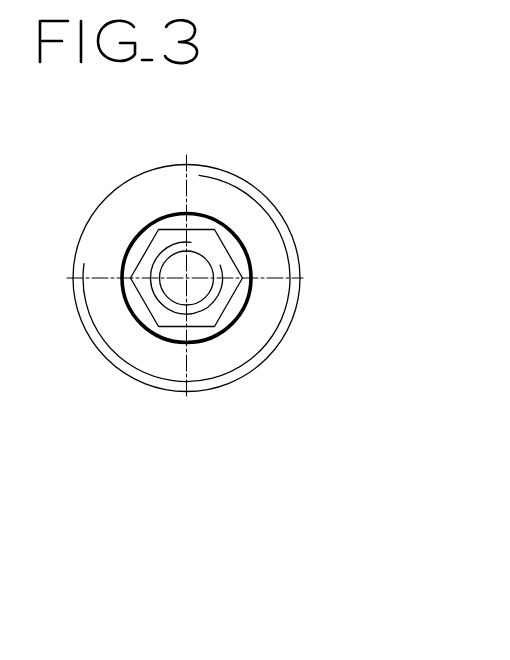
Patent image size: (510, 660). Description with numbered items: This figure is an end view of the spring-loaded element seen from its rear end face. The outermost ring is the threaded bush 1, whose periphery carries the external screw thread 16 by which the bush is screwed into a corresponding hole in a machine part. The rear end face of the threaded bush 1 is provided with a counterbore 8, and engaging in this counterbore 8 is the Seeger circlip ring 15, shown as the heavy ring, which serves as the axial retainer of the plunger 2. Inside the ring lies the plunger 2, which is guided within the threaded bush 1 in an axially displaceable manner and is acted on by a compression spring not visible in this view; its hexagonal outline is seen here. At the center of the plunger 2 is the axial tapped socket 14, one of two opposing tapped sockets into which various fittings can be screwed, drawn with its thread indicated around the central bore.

The threaded bush 1 is at (140, 197).
The plunger 2 is at (172, 320).
The counterbore 8 is at (138, 312).
The axial tapped socket 14 is at (193, 258).
The Seeger circlip ring 15 is at (184, 201).
The external screw thread 16 is at (287, 248).